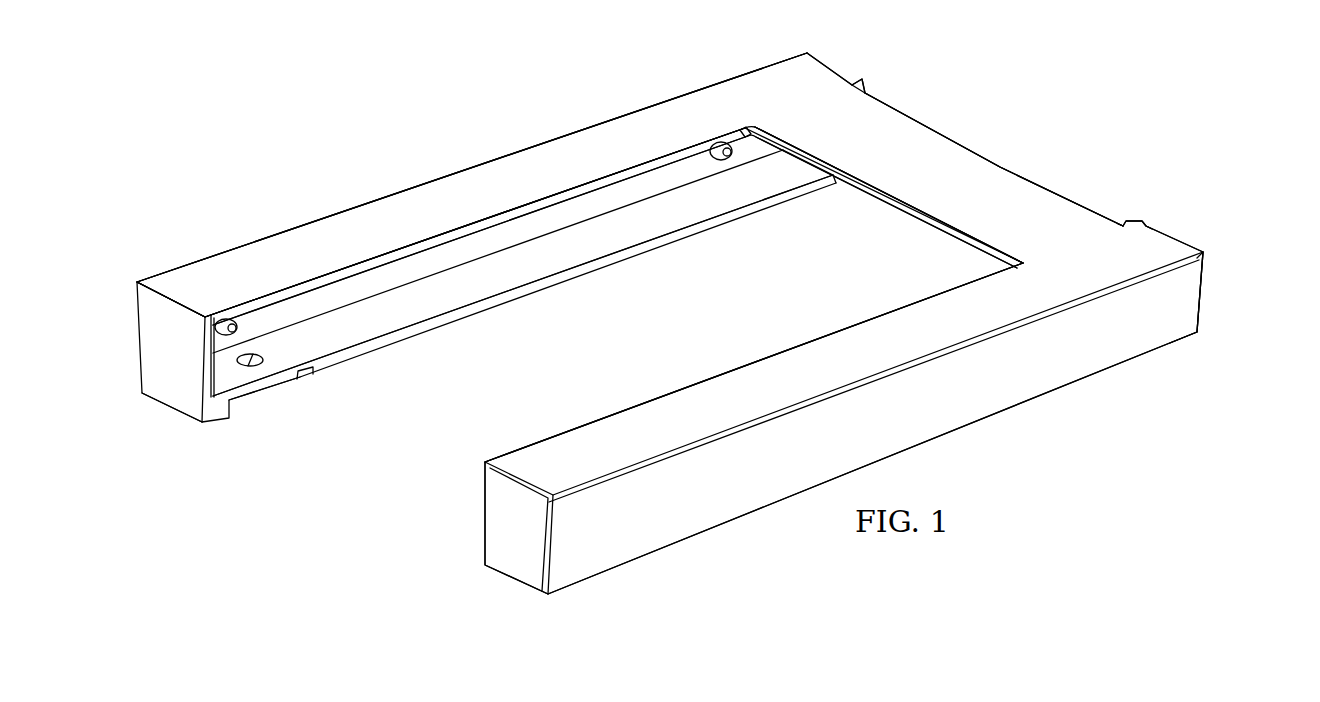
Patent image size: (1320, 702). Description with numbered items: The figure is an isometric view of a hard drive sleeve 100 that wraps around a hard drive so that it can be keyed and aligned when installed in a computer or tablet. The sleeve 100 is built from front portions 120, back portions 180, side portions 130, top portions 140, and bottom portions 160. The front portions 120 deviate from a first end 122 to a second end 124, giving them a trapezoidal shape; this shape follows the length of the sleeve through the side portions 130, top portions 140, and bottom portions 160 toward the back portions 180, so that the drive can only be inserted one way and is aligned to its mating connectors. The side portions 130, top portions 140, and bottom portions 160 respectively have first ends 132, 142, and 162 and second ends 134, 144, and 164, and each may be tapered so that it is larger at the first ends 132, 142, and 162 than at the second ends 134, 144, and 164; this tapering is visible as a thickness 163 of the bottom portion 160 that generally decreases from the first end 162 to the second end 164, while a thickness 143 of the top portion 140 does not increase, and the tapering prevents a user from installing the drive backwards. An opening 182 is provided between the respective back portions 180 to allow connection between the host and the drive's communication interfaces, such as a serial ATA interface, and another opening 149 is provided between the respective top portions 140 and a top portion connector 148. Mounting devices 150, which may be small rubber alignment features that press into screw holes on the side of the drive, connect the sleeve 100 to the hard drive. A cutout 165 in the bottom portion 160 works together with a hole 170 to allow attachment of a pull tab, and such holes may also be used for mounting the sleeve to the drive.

The hard drive sleeve 100 is at (455, 82).
The front portion 120 is at (150, 338).
The first end 122 is at (168, 416).
The second end 124 is at (158, 318).
The side portion 130 is at (1025, 385).
The first end 132 is at (566, 562).
The second end 134 is at (1214, 290).
The top portion 140 is at (472, 170).
The first end 142 is at (187, 294).
The thickness 143 is at (553, 186).
The second end 144 is at (813, 78).
The top portion connector 148 is at (985, 158).
The opening 149 is at (400, 483).
The mounting device 150 is at (708, 170).
The bottom portion 160 is at (400, 356).
The first end 162 is at (229, 425).
The thickness 163 is at (470, 310).
The second end 164 is at (832, 194).
The cutout 165 is at (300, 380).
The hole 170 is at (257, 360).
The back portion 180 is at (1180, 225).
The opening 182 is at (1070, 172).